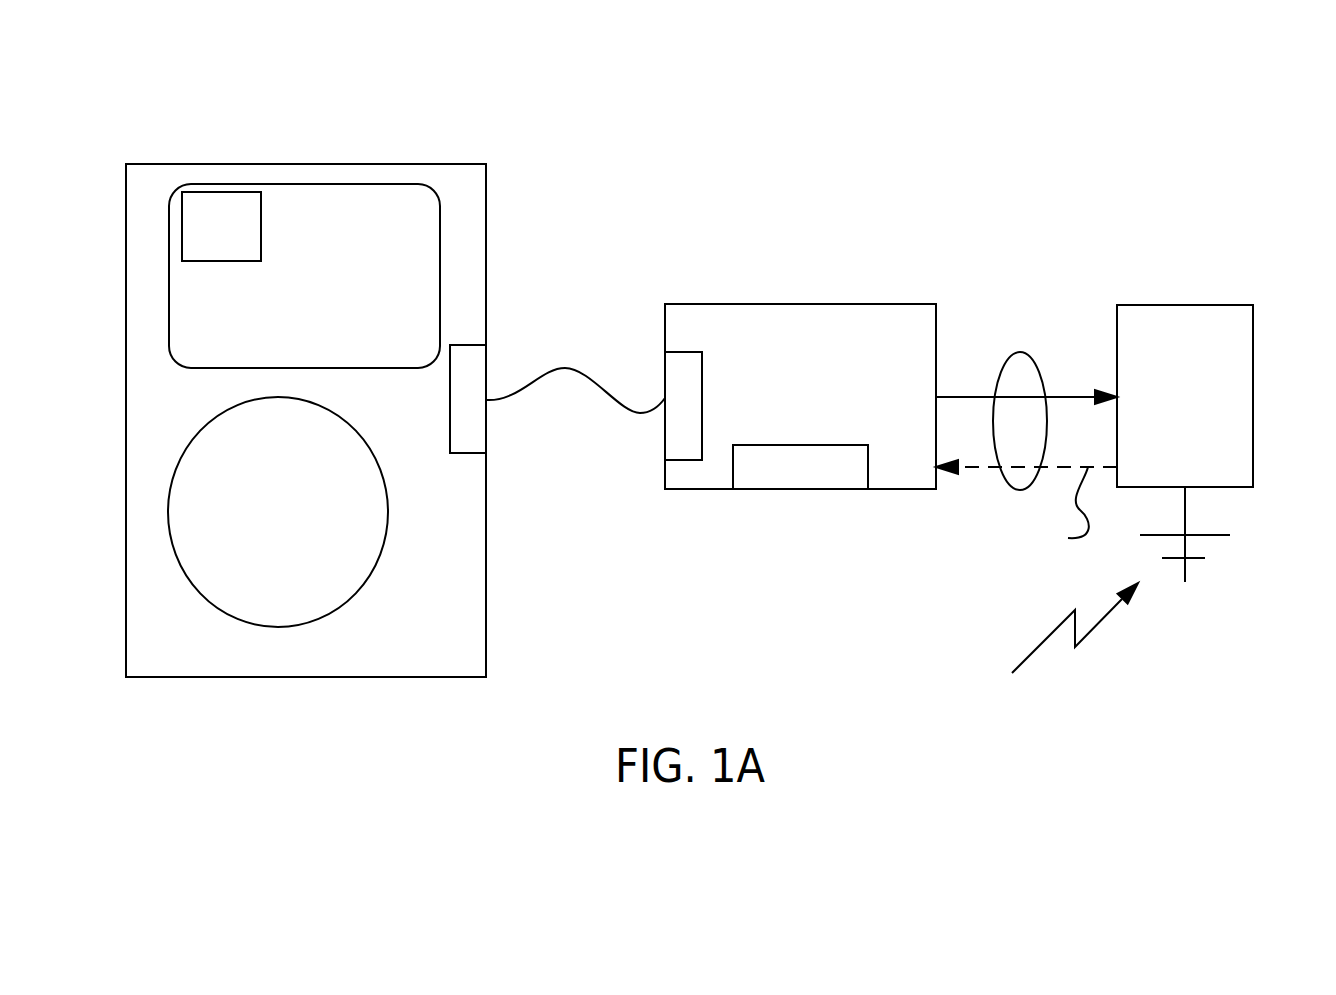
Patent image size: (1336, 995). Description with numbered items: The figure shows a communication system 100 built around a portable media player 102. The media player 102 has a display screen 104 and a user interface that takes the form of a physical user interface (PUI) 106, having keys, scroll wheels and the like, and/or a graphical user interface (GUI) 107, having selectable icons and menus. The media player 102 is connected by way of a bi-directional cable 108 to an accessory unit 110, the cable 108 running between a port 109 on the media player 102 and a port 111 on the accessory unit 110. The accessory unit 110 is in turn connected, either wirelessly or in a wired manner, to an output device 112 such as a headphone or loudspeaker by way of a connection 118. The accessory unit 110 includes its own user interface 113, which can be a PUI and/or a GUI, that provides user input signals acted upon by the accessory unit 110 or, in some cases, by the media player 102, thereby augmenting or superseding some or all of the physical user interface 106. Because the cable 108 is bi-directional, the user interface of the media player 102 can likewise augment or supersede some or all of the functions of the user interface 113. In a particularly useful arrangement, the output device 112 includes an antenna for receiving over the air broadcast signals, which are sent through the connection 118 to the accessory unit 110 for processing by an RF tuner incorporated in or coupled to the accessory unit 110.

The system 100 is at (689, 401).
The portable media player 102 is at (305, 165).
The display screen 104 is at (304, 276).
The physical user interface (PUI) 106 is at (278, 512).
The graphical user interface (GUI) 107 is at (221, 226).
The bi-directional cable 108 is at (572, 347).
The port 109 is at (486, 420).
The accessory unit 110 is at (768, 432).
The port 111 is at (683, 460).
The output device 112 is at (1185, 443).
The user interface 113 is at (800, 467).
The connection 118 is at (1020, 352).